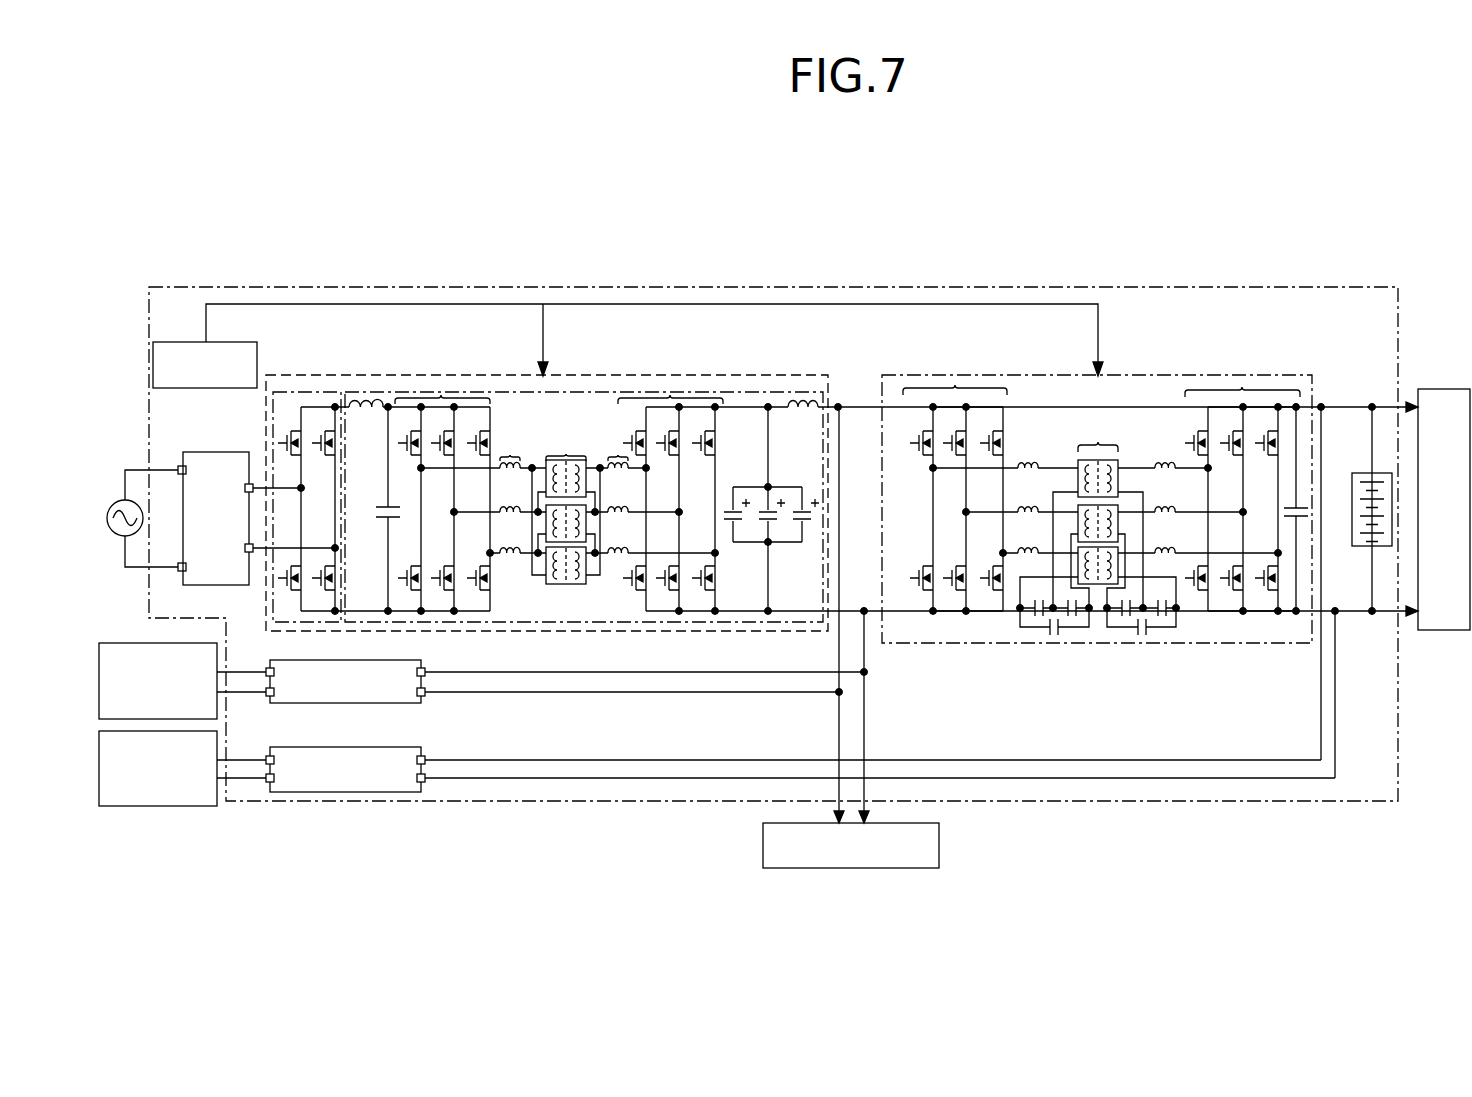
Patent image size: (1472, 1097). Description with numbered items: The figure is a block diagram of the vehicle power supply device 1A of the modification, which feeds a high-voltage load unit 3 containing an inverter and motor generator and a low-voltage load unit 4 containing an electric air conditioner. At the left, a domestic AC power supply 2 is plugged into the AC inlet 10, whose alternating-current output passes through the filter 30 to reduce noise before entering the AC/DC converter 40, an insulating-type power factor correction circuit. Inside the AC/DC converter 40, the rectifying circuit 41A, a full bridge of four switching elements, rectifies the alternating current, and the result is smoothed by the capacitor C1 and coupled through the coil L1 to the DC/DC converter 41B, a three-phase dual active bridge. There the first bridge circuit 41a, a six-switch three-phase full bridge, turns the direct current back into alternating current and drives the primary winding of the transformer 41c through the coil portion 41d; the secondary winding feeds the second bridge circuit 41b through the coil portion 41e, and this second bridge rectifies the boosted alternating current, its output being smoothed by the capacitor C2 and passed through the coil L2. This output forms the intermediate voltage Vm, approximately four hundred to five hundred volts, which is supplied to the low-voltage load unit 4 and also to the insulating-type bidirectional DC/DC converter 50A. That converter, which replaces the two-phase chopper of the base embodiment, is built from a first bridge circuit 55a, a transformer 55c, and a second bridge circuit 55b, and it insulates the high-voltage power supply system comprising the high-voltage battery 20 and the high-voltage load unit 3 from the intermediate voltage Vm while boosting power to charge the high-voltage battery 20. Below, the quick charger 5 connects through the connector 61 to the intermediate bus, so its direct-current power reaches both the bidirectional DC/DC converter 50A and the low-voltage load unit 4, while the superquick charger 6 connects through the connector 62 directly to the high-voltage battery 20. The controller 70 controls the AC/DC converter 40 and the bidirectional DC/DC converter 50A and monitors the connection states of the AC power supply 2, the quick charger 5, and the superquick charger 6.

The vehicle power supply device 1A is at (901, 285).
The controller 70 is at (221, 342).
The AC power supply 2 is at (125, 500).
The AC inlet 10 is at (180, 465).
The filter 30 is at (216, 452).
The AC/DC converter 40 is at (759, 376).
The rectifying circuit 41A is at (310, 392).
The coil L1 is at (370, 416).
The capacitor C1 is at (385, 521).
The DC/DC converter 41B is at (609, 391).
The first bridge circuit 41a is at (443, 393).
The coil portion 41d is at (520, 491).
The transformer 41c is at (566, 507).
The coil portion 41e is at (614, 456).
The second bridge circuit 41b is at (670, 397).
The capacitor C2 is at (767, 485).
The coil L2 is at (808, 418).
The bidirectional DC/DC converter 50A is at (1159, 372).
The first bridge circuit 55a is at (953, 387).
The transformer 55c is at (1098, 523).
The second bridge circuit 55b is at (1240, 387).
The high-voltage battery 20 is at (1363, 470).
The high-voltage load unit 3 is at (1444, 388).
The low-voltage load unit 4 is at (939, 848).
The intermediate voltage Vm is at (839, 733).
The quick charger 5 is at (161, 630).
The superquick charger 6 is at (170, 806).
The connector 61 is at (333, 660).
The connector 62 is at (333, 747).